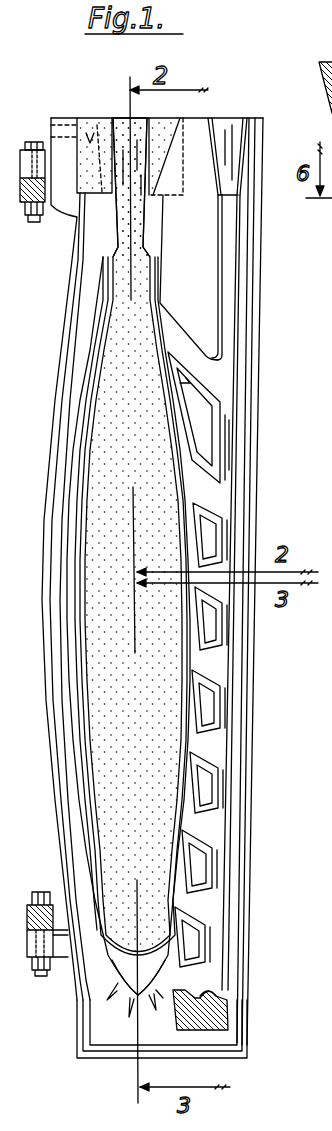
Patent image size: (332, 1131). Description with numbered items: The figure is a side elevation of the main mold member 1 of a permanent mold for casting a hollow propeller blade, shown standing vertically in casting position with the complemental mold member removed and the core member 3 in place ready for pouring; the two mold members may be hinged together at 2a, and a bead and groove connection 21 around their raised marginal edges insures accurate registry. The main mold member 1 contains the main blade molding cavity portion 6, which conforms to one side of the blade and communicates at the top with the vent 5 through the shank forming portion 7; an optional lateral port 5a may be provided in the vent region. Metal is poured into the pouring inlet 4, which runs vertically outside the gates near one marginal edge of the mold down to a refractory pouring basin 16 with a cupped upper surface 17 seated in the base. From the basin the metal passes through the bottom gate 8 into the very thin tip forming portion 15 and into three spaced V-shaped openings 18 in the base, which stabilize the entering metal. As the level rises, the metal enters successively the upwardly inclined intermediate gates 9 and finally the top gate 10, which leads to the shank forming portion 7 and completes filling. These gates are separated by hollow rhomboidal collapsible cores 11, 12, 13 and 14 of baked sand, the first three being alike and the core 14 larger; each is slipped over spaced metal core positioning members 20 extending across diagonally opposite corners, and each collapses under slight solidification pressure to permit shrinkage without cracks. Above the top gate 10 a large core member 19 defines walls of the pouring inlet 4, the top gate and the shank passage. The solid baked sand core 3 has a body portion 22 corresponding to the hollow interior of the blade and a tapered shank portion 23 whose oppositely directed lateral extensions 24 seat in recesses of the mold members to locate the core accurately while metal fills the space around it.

The main mold member 1 is at (256, 230).
The hinge 2a is at (22, 203).
The core member 3 is at (130, 282).
The pouring inlet 4 is at (228, 132).
The vent 5 is at (98, 130).
The lateral port 5a is at (60, 125).
The main blade molding cavity portion 6 is at (70, 596).
The shank forming portion 7 is at (108, 300).
The bottom gate 8 is at (188, 982).
The intermediate gates 9 is at (195, 903).
The top gate 10 is at (195, 366).
The collapsible core 11 is at (200, 955).
The collapsible core 12 is at (212, 790).
The collapsible core 13 is at (215, 628).
The collapsible core 14 is at (215, 437).
The thin tip forming portion 15 is at (128, 968).
The pouring basin 16 is at (210, 1020).
The cupped upper surface 17 is at (222, 998).
The V-shaped openings 18 is at (132, 1000).
The large core member 19 is at (205, 288).
The core positioning members 20 is at (200, 927).
The bead and groove connection 21 is at (68, 362).
The body portion 22 is at (107, 500).
The tapered shank portion 23 is at (137, 235).
The lateral extensions 24 is at (170, 163).